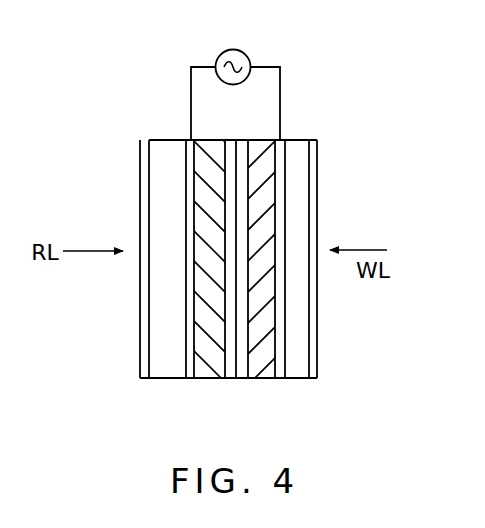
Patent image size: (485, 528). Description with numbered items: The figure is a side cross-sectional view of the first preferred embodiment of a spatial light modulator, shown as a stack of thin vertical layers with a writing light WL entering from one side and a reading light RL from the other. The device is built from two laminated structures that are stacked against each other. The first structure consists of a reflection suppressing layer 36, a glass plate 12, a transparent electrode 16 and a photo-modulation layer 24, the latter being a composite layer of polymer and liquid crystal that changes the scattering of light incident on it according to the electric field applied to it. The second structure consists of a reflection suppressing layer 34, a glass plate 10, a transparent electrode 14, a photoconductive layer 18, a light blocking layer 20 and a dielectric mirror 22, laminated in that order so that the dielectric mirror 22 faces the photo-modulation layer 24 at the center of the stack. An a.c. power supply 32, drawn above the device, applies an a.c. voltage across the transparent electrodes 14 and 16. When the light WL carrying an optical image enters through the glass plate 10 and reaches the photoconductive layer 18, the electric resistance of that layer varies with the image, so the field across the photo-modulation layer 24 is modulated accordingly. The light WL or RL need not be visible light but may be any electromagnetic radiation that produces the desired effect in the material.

The glass plate 10 is at (298, 150).
The glass plate 12 is at (163, 148).
The transparent electrode 14 is at (275, 368).
The transparent electrode 16 is at (190, 365).
The photoconductive layer 18 is at (260, 370).
The light blocking layer 20 is at (240, 372).
The dielectric mirror 22 is at (231, 372).
The photo-modulation layer 24 is at (203, 368).
The a.c. power supply 32 is at (233, 49).
The reflection suppressing layer 34 is at (316, 142).
The reflection suppressing layer 36 is at (145, 155).